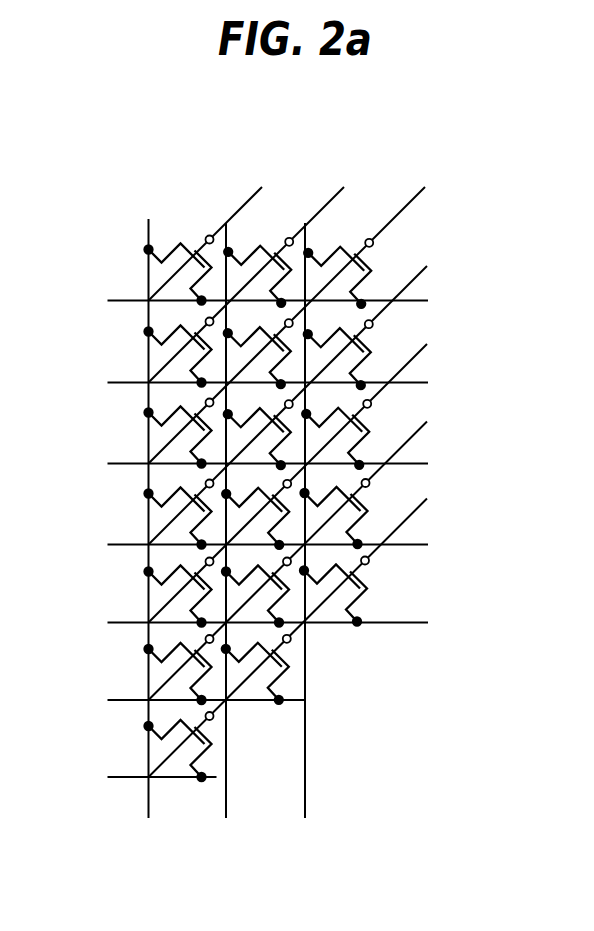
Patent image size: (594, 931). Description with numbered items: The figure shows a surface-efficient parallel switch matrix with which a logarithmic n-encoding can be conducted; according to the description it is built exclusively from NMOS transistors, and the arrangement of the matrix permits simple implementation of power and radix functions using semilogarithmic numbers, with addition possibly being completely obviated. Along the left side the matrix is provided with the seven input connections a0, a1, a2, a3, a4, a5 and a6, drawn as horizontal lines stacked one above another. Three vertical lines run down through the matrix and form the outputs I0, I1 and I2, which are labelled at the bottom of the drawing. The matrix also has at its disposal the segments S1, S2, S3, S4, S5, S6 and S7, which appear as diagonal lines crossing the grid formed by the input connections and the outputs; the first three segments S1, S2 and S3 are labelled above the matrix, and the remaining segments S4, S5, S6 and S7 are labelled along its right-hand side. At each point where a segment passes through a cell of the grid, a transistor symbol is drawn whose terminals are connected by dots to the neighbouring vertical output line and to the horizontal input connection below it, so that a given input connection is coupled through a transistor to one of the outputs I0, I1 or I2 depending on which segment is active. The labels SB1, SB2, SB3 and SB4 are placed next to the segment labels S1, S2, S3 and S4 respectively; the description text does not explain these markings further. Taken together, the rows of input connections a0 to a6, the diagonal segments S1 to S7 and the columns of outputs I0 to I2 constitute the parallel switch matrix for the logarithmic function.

The input connection a0 is at (264, 281).
The input connection a1 is at (264, 363).
The input connection a2 is at (264, 443).
The input connection a3 is at (264, 525).
The input connection a4 is at (264, 603).
The input connection a5 is at (202, 680).
The input connection a6 is at (158, 757).
The output I0 is at (305, 543).
The output I1 is at (225, 543).
The output I2 is at (148, 541).
The segment S1 is at (222, 219).
The segment S2 is at (263, 260).
The segment S3 is at (303, 301).
The segment S4 is at (310, 380).
The segment S5 is at (310, 459).
The segment S6 is at (310, 536).
The segment S7 is at (310, 614).
The select bar line SB1 is at (289, 114).
The select bar line SB2 is at (369, 114).
The select bar line SB3 is at (450, 114).
The select bar line SB4 is at (542, 234).